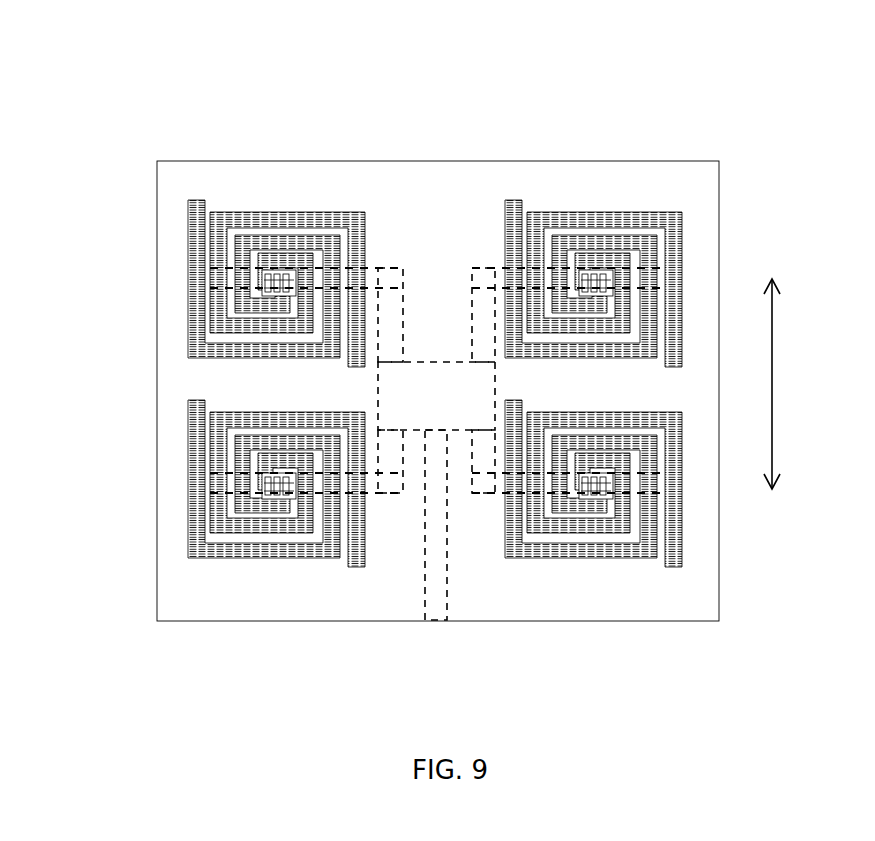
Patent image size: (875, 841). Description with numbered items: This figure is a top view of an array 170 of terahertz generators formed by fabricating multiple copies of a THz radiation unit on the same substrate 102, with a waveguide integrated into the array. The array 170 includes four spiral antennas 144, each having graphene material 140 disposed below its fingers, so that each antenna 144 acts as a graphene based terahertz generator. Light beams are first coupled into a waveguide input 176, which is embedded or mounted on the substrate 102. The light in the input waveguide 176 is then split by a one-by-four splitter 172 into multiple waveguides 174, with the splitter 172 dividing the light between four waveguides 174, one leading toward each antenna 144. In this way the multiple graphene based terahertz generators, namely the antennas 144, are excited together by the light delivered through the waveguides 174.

The array 170 is at (384, 50).
The substrate 102 is at (719, 600).
The spiral antenna 144 is at (243, 211).
The graphene material 140 is at (610, 483).
The splitter 172 is at (487, 383).
The waveguides 174 is at (492, 262).
The waveguide input 176 is at (442, 620).